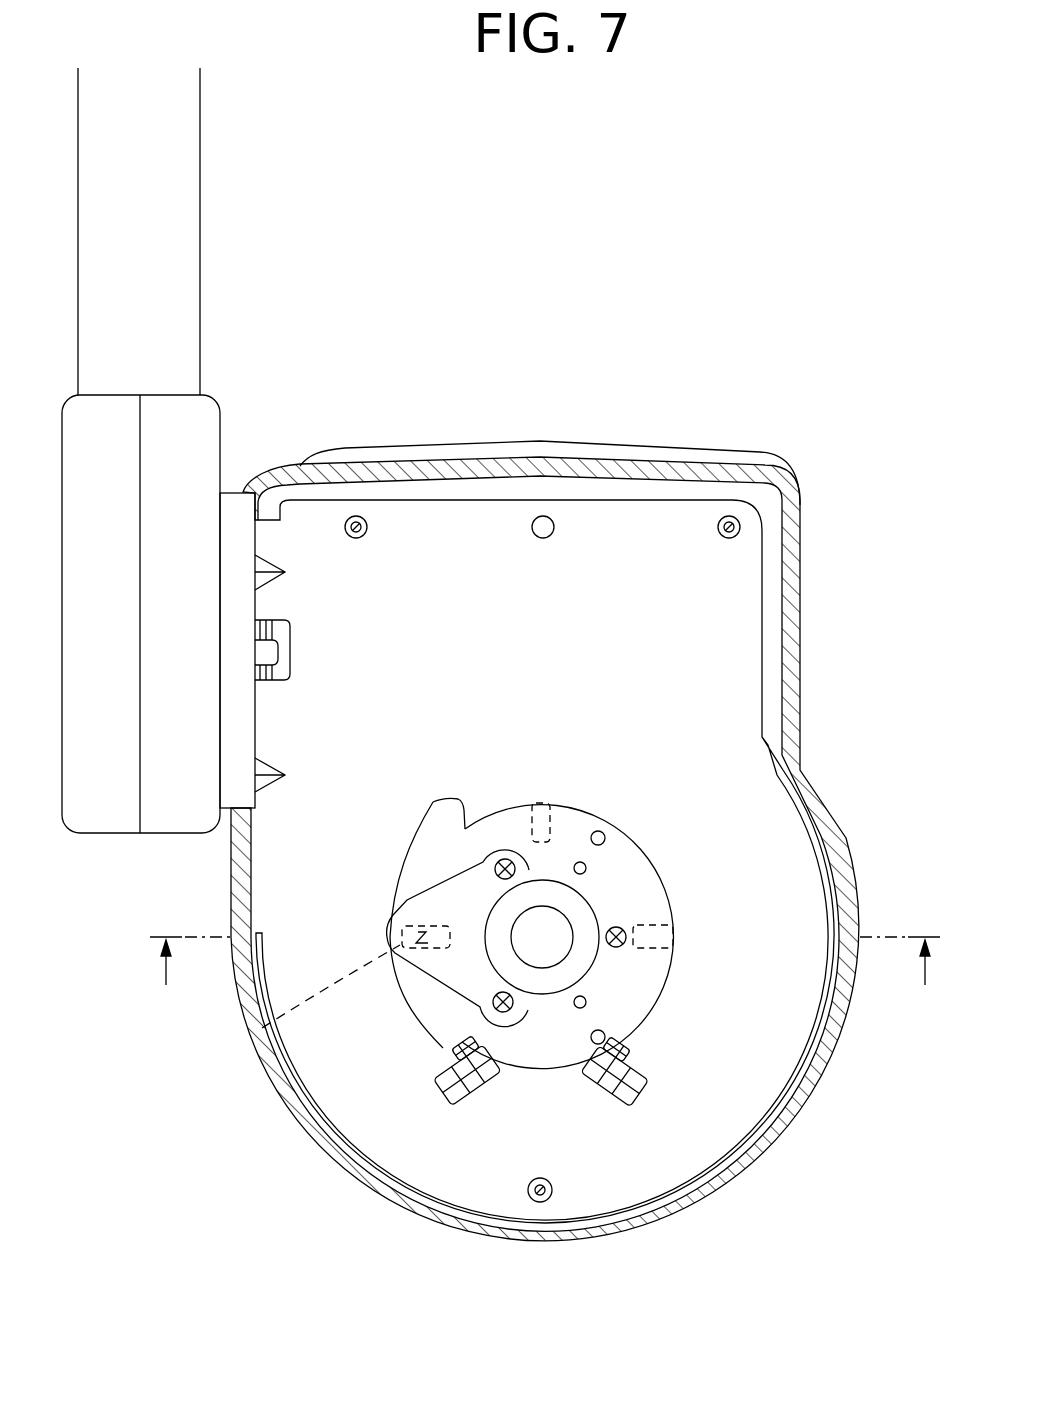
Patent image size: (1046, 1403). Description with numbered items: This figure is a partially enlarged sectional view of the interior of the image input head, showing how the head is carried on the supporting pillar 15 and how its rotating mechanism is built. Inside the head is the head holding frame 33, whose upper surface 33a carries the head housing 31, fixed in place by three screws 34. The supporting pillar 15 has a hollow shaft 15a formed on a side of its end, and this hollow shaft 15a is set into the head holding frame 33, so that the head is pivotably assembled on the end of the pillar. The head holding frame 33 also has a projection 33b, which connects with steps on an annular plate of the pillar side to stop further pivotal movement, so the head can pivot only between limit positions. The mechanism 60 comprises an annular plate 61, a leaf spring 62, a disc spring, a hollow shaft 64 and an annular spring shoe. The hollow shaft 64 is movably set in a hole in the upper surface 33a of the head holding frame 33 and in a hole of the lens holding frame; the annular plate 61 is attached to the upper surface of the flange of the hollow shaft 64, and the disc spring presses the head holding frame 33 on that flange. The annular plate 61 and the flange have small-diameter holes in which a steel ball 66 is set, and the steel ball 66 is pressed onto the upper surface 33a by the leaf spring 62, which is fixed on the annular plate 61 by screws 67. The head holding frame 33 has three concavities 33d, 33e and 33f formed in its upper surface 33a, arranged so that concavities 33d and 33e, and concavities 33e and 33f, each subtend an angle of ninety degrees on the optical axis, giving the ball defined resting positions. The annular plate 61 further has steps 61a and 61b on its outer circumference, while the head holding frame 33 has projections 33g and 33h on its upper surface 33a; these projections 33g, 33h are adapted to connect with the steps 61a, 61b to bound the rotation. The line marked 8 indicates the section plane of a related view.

The supporting pillar 15 is at (187, 255).
The hollow shaft 15a is at (232, 497).
The head housing 31 is at (790, 548).
The head holding frame 33 is at (765, 622).
The upper surface 33a is at (733, 680).
The projection 33b is at (262, 655).
The concavity 33d is at (425, 945).
The concavity 33e is at (543, 805).
The concavity 33f is at (675, 942).
The projection 33g is at (465, 1090).
The projection 33h is at (640, 1100).
The screw 34 is at (358, 520).
The mechanism 60 is at (668, 870).
The annular plate 61 is at (625, 858).
The step 61a is at (457, 1078).
The step 61b is at (432, 803).
The leaf spring 62 is at (508, 968).
The hollow shaft 64 is at (455, 1052).
The steel ball 66 is at (262, 1028).
The screw 67 is at (498, 870).
The section line 8- 8 is at (545, 981).